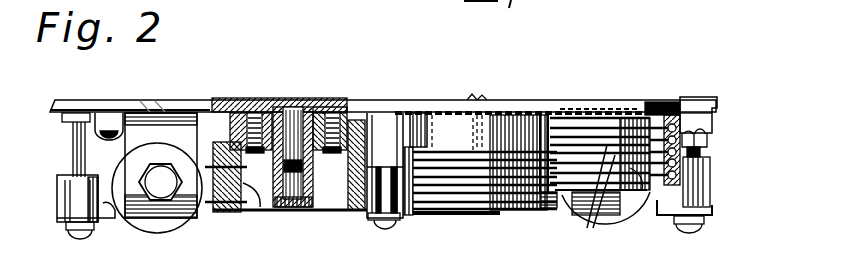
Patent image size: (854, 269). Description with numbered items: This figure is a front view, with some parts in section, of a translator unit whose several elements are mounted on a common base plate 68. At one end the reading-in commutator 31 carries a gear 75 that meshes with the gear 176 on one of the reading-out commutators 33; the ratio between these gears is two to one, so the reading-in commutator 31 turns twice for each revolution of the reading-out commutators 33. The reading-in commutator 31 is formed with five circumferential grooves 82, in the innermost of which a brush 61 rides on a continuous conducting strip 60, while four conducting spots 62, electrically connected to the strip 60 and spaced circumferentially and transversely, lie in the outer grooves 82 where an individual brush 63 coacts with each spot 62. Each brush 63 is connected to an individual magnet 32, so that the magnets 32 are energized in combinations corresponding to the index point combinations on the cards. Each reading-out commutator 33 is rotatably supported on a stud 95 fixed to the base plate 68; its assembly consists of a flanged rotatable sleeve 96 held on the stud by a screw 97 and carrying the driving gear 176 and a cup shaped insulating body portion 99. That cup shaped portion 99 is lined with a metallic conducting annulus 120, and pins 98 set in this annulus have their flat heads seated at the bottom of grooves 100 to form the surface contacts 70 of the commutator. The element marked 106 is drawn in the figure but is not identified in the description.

The base plate 68 is at (154, 108).
The gear 176 is at (221, 103).
The cup shaped insulating body portion 99 is at (250, 105).
The reading-out commutator 33 is at (294, 108).
The stud 95 is at (328, 108).
The flanged rotatable sleeve 96 is at (311, 168).
The screw 97 is at (289, 199).
The metallic conducting annulus 120 is at (253, 198).
The pins 98 is at (221, 158).
The surface contacts 70 is at (213, 163).
The grooves 100 is at (220, 203).
The magnet 32 is at (150, 228).
The plunger 106 is at (111, 223).
The continuous conducting strip 60 is at (572, 120).
The gear 75 is at (598, 107).
The reading-in commutator 31 is at (653, 107).
The brush 61 is at (678, 128).
The brush 63 is at (680, 178).
The circumferential grooves 82 is at (641, 207).
The conducting spots 62 is at (615, 173).